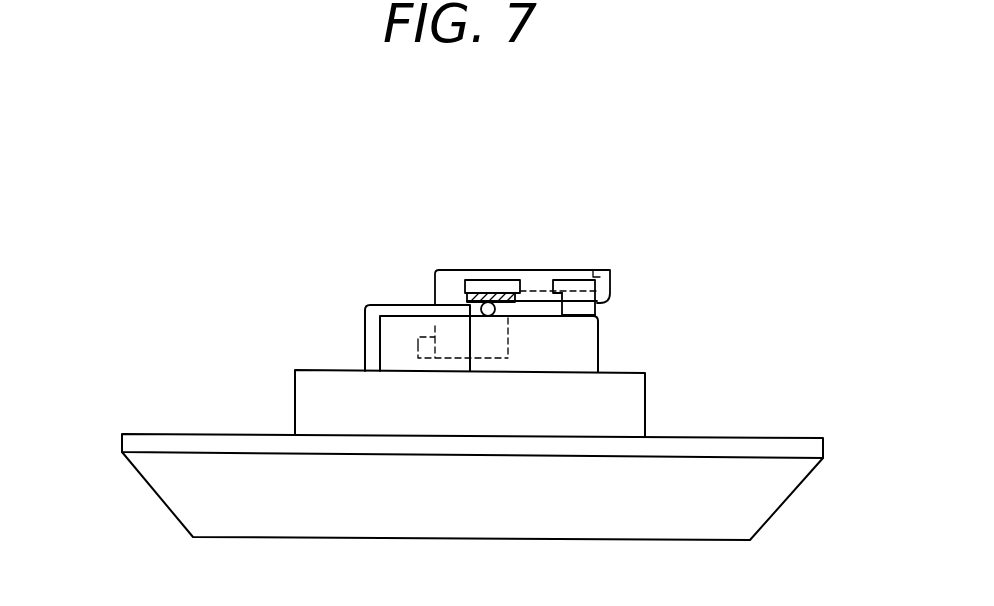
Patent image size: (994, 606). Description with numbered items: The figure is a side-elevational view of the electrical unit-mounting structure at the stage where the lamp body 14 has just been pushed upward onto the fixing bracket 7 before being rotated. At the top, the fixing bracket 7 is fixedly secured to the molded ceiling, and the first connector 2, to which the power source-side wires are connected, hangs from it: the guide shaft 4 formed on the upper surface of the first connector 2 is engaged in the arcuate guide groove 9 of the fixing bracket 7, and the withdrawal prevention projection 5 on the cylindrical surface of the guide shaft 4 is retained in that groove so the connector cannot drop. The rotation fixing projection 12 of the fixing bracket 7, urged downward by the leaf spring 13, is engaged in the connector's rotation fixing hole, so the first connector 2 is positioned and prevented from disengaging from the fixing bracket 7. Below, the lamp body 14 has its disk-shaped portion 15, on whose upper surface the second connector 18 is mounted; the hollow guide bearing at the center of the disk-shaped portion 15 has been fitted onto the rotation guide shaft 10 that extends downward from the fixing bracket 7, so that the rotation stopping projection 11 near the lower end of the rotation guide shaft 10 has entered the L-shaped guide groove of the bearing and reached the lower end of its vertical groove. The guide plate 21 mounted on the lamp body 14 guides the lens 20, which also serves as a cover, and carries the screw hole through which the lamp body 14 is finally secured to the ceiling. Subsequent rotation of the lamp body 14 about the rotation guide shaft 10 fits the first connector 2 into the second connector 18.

The first connector 2 is at (558, 368).
The guide shaft 4 is at (597, 310).
The withdrawal prevention projection 5 is at (570, 280).
The fixing bracket 7 is at (495, 270).
The arcuate guide groove 9 is at (593, 272).
The rotation guide shaft 10 is at (508, 340).
The rotation stopping projection 11 is at (418, 345).
The rotation fixing projection 12 is at (497, 307).
The leaf spring 13 is at (498, 302).
The lamp body 14 is at (186, 386).
The disk-shaped portion 15 is at (295, 415).
The second connector 18 is at (396, 304).
The lens 20 is at (160, 500).
The guide plate 21 is at (188, 433).